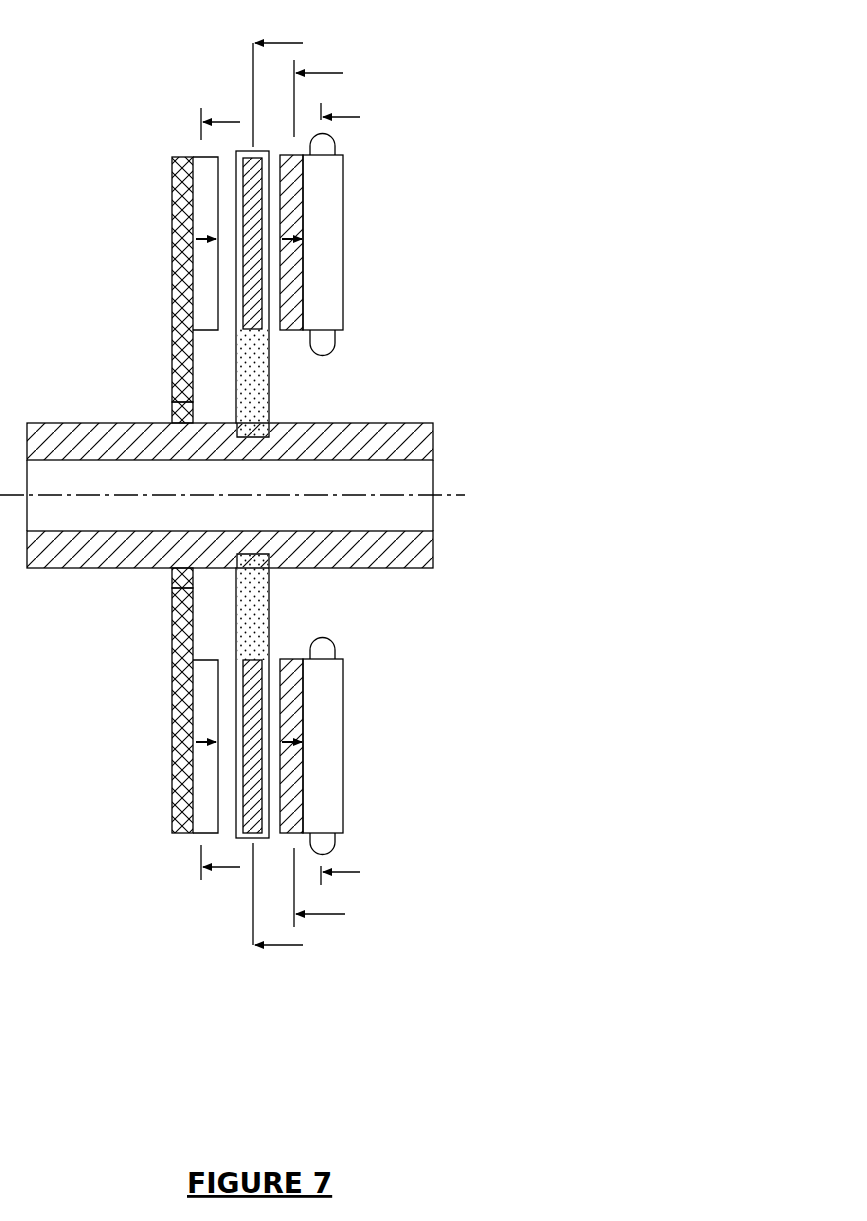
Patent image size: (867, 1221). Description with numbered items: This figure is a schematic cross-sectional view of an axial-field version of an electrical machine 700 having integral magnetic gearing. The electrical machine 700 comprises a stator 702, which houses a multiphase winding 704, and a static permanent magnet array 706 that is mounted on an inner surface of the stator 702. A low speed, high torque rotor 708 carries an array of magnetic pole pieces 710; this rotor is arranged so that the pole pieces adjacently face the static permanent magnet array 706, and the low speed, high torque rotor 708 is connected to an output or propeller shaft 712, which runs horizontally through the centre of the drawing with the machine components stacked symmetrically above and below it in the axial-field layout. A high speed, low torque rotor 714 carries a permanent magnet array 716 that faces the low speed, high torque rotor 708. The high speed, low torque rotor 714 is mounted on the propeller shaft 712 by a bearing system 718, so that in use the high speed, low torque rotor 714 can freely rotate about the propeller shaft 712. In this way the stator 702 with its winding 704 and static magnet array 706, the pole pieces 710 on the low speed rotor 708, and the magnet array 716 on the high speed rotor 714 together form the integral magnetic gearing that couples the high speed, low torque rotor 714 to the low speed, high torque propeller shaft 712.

The electrical machine 700 is at (452, 628).
The stator 702 is at (328, 180).
The multiphase winding 704 is at (325, 345).
The static permanent magnet array 706 is at (295, 190).
The low speed, high torque rotor 708 is at (250, 355).
The array of magnetic pole pieces 710 is at (253, 807).
The propeller shaft 712 is at (410, 512).
The high speed, low torque rotor 714 is at (185, 648).
The permanent magnet array 716 is at (210, 777).
The bearing system 718 is at (177, 410).